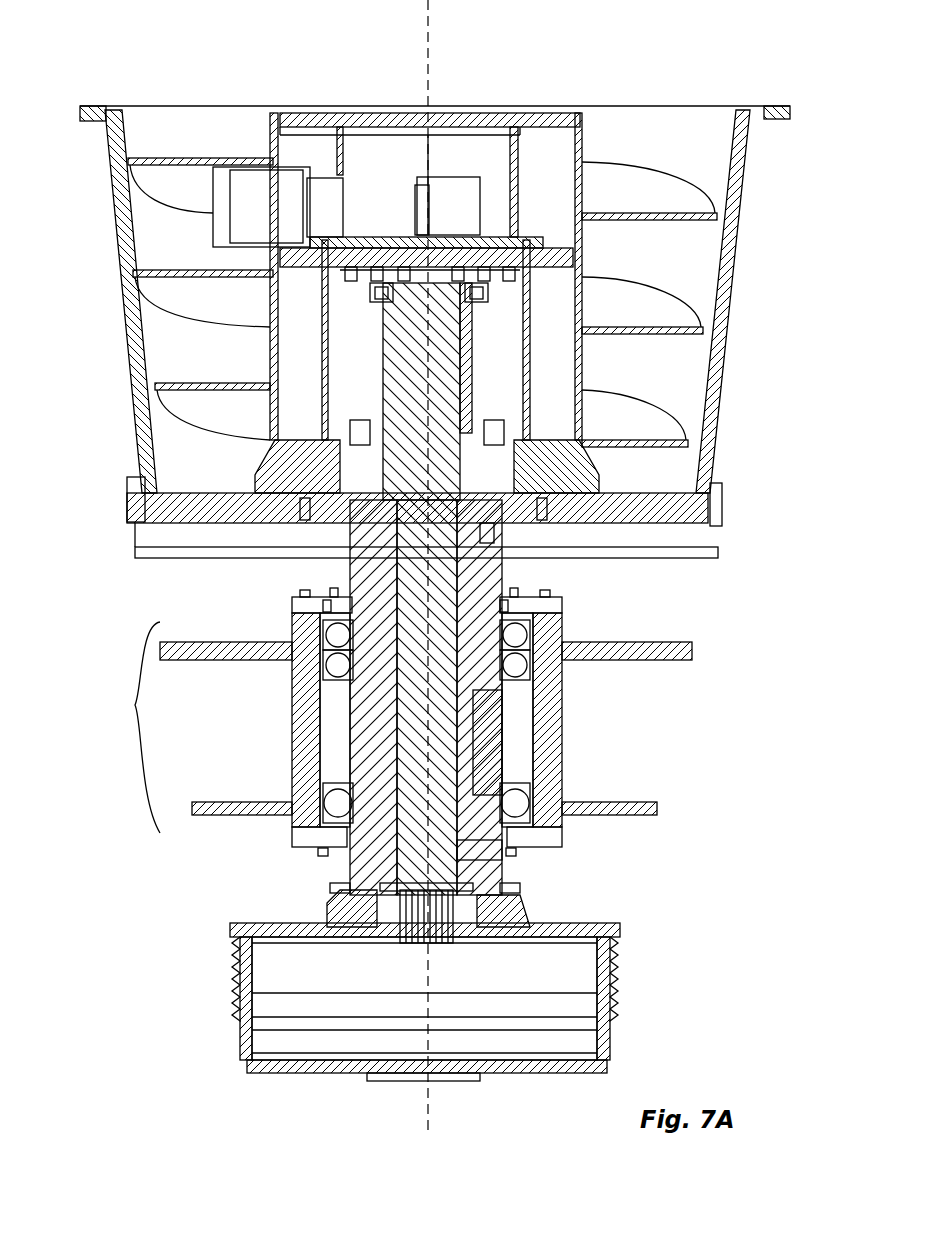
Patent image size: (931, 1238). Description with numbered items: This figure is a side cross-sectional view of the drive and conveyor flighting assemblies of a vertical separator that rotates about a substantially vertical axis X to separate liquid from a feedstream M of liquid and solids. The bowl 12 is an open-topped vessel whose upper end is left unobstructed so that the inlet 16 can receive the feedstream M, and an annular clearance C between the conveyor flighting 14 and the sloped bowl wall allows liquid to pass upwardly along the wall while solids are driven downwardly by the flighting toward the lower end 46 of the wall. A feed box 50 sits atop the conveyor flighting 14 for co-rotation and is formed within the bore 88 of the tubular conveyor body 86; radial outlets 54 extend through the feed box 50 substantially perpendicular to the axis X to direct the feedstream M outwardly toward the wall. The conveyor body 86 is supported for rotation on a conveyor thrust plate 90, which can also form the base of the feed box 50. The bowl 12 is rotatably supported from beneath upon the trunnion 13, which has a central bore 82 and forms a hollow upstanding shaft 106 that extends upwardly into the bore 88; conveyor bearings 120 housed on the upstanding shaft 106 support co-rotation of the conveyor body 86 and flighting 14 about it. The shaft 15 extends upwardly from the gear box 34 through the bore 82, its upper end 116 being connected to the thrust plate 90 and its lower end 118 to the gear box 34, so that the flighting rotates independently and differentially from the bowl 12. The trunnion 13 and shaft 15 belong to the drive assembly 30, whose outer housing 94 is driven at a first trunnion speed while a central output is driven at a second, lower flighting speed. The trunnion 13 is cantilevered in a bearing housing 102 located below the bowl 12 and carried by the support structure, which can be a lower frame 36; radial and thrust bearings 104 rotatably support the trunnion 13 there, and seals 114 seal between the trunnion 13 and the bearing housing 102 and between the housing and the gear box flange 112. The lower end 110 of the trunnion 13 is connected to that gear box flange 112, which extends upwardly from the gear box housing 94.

The bowl 12 is at (750, 152).
The trunnion 13 is at (208, 508).
The conveyor flighting 14 is at (200, 192).
The shaft 15 is at (497, 440).
The inlet 16 is at (480, 113).
The drive assembly 30 is at (759, 1094).
The gear box 34 is at (378, 992).
The lower frame 36 is at (135, 705).
The lower end of the wall 46 is at (710, 478).
The feed box 50 is at (540, 140).
The radial outlets 54 is at (468, 198).
The central bore 82 is at (397, 520).
The conveyor body 86 is at (580, 380).
The bore 88 is at (573, 140).
The conveyor thrust plate 90 is at (580, 255).
The outer housing 94 is at (527, 920).
The bearing housing 102 is at (562, 735).
The radial and thrust bearings 104 is at (336, 635).
The upstanding shaft 106 is at (388, 343).
The lower end of the trunnion 110 is at (465, 765).
The gear box flange 112 is at (507, 870).
The seals 114 is at (507, 588).
The upper end 116 is at (395, 312).
The lower end 118 is at (353, 898).
The conveyor bearings 120 is at (385, 290).
The annular clearance C is at (715, 215).
The feedstream M is at (322, 207).
The vertical axis X is at (435, 1126).